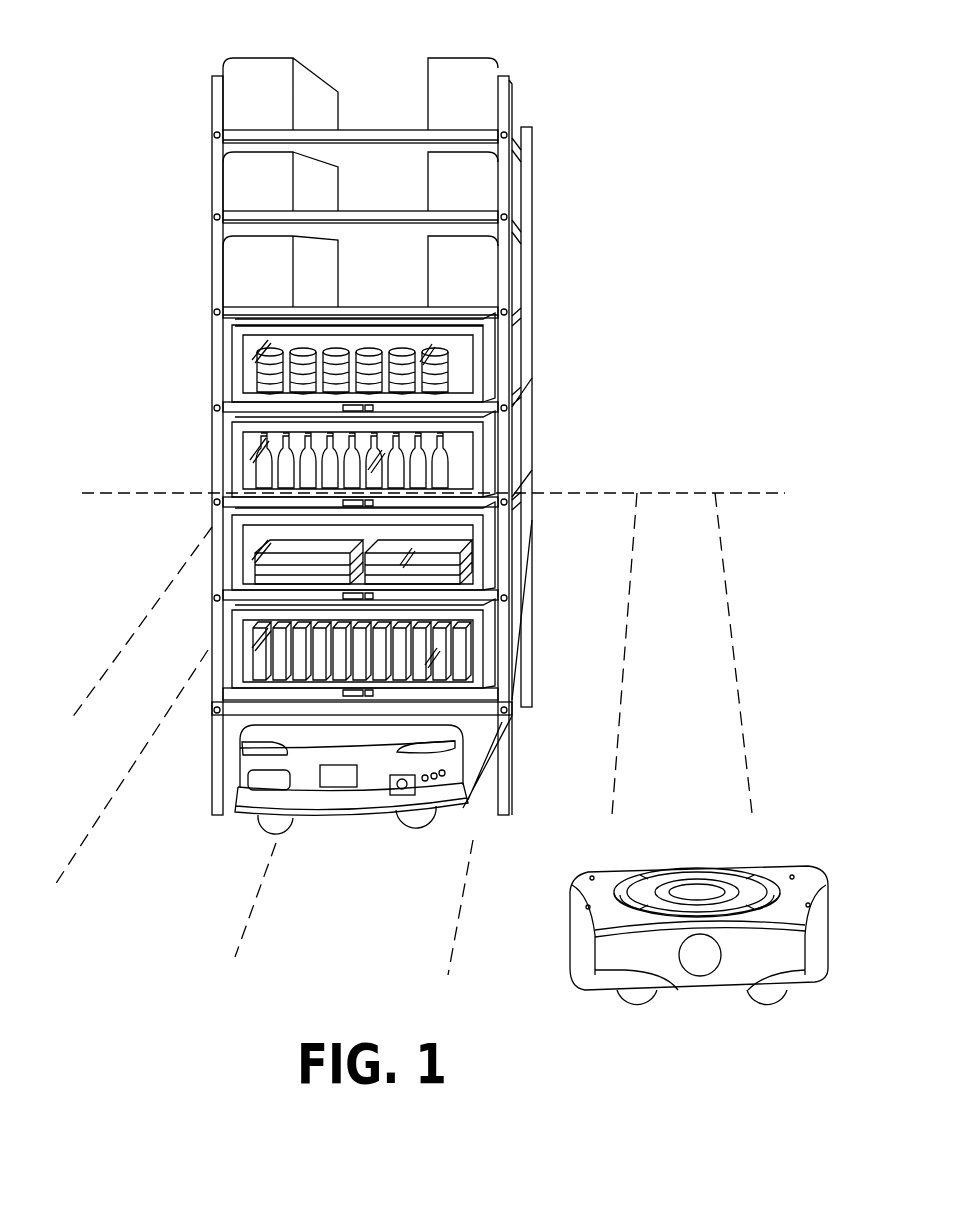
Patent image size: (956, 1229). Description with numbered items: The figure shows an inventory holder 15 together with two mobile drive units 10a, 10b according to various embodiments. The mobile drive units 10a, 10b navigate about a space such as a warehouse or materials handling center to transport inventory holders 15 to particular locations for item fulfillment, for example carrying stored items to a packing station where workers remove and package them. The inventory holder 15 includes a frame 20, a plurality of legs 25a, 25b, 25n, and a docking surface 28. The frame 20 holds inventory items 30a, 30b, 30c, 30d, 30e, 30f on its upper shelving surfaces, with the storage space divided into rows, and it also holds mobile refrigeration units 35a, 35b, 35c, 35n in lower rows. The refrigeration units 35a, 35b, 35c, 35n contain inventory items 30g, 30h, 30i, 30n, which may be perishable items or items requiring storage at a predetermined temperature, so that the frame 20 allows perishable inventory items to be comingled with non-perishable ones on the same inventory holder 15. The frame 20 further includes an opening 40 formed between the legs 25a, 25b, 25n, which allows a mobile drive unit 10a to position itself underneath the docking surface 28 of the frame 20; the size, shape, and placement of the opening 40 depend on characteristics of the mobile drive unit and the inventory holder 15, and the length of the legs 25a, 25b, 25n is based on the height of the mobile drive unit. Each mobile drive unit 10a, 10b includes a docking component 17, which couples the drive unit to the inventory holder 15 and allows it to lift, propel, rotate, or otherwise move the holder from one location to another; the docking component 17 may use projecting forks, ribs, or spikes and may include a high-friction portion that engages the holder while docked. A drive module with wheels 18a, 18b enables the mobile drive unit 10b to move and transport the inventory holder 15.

The mobile drive unit 10a is at (350, 824).
The mobile drive unit 10b is at (556, 982).
The inventory holder 15 is at (546, 75).
The docking component 17 is at (672, 858).
The wheel 18a is at (628, 1001).
The wheel 18b is at (774, 1001).
The frame 20 is at (210, 100).
The leg 25a is at (210, 792).
The leg 25b is at (515, 778).
The leg 25n is at (535, 693).
The docking surface 28 is at (212, 708).
The inventory item 30a is at (280, 94).
The inventory item 30b is at (463, 94).
The inventory item 30c is at (280, 181).
The inventory item 30d is at (463, 181).
The inventory item 30e is at (280, 271).
The inventory item 30f is at (463, 271).
The inventory item 30g is at (238, 385).
The inventory item 30h is at (238, 472).
The inventory item 30i is at (238, 558).
The inventory item 30n is at (238, 646).
The mobile refrigeration unit 35a is at (485, 354).
The mobile refrigeration unit 35b is at (485, 444).
The mobile refrigeration unit 35c is at (485, 552).
The mobile refrigeration unit 35n is at (485, 641).
The opening 40 is at (482, 824).